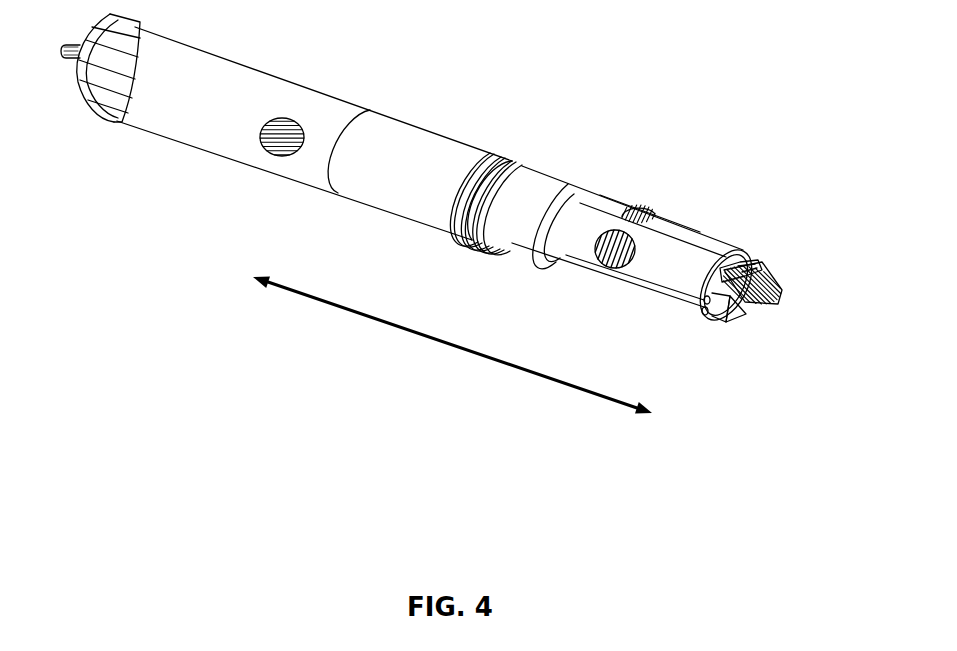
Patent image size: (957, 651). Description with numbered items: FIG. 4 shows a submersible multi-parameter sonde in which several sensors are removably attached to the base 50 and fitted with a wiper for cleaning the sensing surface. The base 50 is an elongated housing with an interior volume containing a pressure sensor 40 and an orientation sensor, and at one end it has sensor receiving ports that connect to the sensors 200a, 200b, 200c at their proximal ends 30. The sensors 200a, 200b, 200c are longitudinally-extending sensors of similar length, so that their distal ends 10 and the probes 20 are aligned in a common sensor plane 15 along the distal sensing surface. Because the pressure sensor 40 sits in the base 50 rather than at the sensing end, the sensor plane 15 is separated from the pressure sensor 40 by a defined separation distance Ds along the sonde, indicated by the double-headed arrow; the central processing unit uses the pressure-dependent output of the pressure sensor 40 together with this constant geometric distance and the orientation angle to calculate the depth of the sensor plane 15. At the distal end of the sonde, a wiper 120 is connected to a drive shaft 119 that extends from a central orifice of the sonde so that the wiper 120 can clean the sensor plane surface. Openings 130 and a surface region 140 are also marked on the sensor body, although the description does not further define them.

The distal end 10 is at (707, 306).
The sensor plane 15 is at (757, 265).
The probe 20 is at (708, 320).
The proximal end 30 is at (580, 192).
The pressure sensor 40 is at (282, 156).
The base 50 is at (432, 150).
The drive shaft 119 is at (742, 322).
The wiper 120 is at (777, 290).
The slotted openings 130 is at (600, 212).
The sleeve surface 140 is at (663, 243).
The sensor 200a is at (690, 240).
The sensor 200b is at (650, 280).
The sensor 200c is at (612, 282).
The separation distance Ds is at (440, 347).